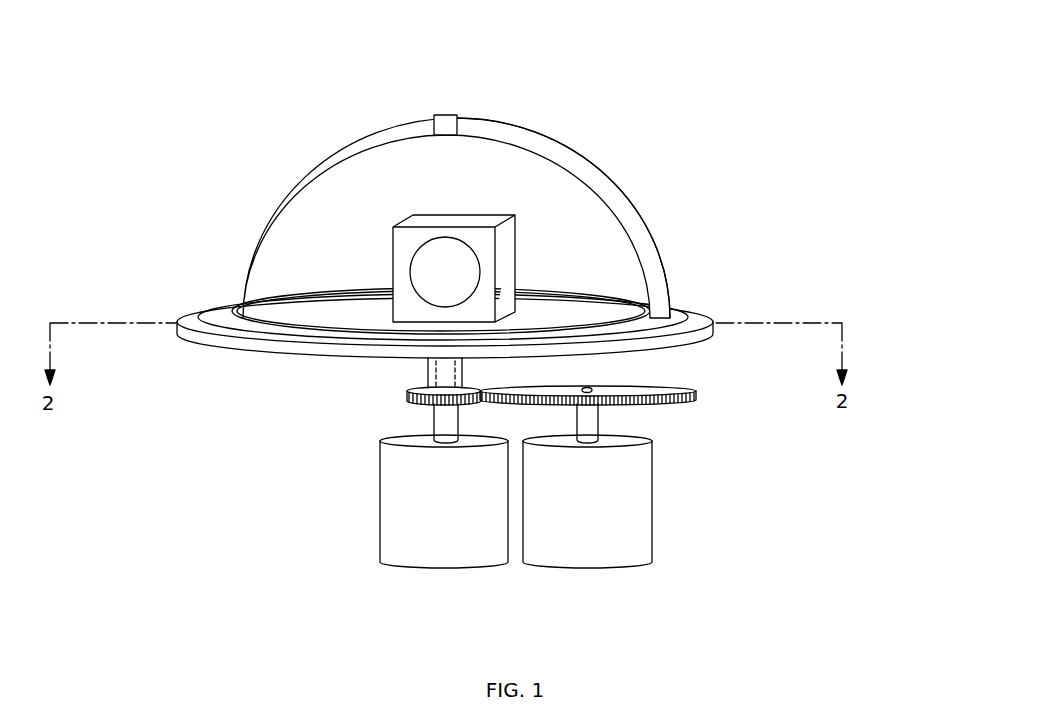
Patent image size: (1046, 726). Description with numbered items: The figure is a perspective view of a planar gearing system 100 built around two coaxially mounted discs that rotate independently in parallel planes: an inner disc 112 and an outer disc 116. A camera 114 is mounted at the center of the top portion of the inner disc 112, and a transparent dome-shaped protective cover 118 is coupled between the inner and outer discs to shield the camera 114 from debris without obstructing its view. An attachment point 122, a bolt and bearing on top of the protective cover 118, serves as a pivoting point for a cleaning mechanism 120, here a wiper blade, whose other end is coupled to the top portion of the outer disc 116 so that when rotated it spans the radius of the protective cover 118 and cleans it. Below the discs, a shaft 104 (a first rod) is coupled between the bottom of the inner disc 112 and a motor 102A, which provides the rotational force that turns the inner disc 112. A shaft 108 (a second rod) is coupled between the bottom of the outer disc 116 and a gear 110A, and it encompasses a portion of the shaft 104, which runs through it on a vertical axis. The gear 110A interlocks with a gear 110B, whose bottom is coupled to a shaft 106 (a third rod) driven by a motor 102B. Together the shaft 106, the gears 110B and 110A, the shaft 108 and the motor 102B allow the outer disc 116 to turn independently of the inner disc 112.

The planar gearing system 100 is at (626, 48).
The motor 102A is at (443, 565).
The motor 102B is at (594, 565).
The shaft 104 is at (432, 422).
The shaft 106 is at (598, 420).
The shaft 108 is at (425, 372).
The gear 110A is at (408, 396).
The gear 110B is at (697, 397).
The inner disc 112 is at (222, 313).
The camera 114 is at (419, 224).
The outer disc 116 is at (187, 317).
The protective cover 118 is at (272, 235).
The cleaning mechanism 120 is at (604, 176).
The attachment point 122 is at (444, 114).